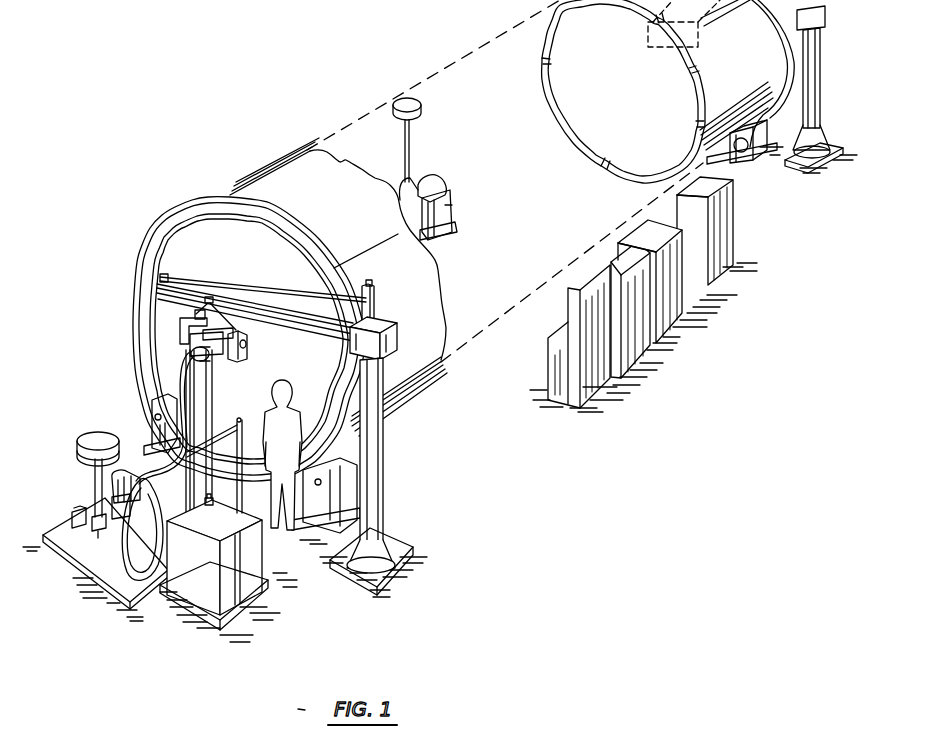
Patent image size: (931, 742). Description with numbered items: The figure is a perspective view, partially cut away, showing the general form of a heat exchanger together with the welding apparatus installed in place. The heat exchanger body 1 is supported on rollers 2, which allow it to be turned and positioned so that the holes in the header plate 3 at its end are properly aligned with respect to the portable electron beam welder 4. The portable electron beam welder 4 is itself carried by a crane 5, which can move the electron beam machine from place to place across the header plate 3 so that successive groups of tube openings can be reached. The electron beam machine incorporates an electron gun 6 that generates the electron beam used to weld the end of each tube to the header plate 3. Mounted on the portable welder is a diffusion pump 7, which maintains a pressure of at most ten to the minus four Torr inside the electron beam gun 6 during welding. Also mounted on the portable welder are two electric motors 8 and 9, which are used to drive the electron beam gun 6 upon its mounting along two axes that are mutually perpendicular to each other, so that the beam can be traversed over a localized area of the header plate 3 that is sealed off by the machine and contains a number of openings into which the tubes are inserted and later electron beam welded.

The heat exchanger body 1 is at (284, 168).
The rollers 2 is at (152, 402).
The header plate 3 is at (182, 246).
The portable electron beam welder 4 is at (183, 337).
The crane 5 is at (384, 439).
The electron gun 6 is at (214, 362).
The diffusion pump 7 is at (190, 357).
The electric motor 8 is at (208, 301).
The electric motor 9 is at (253, 339).